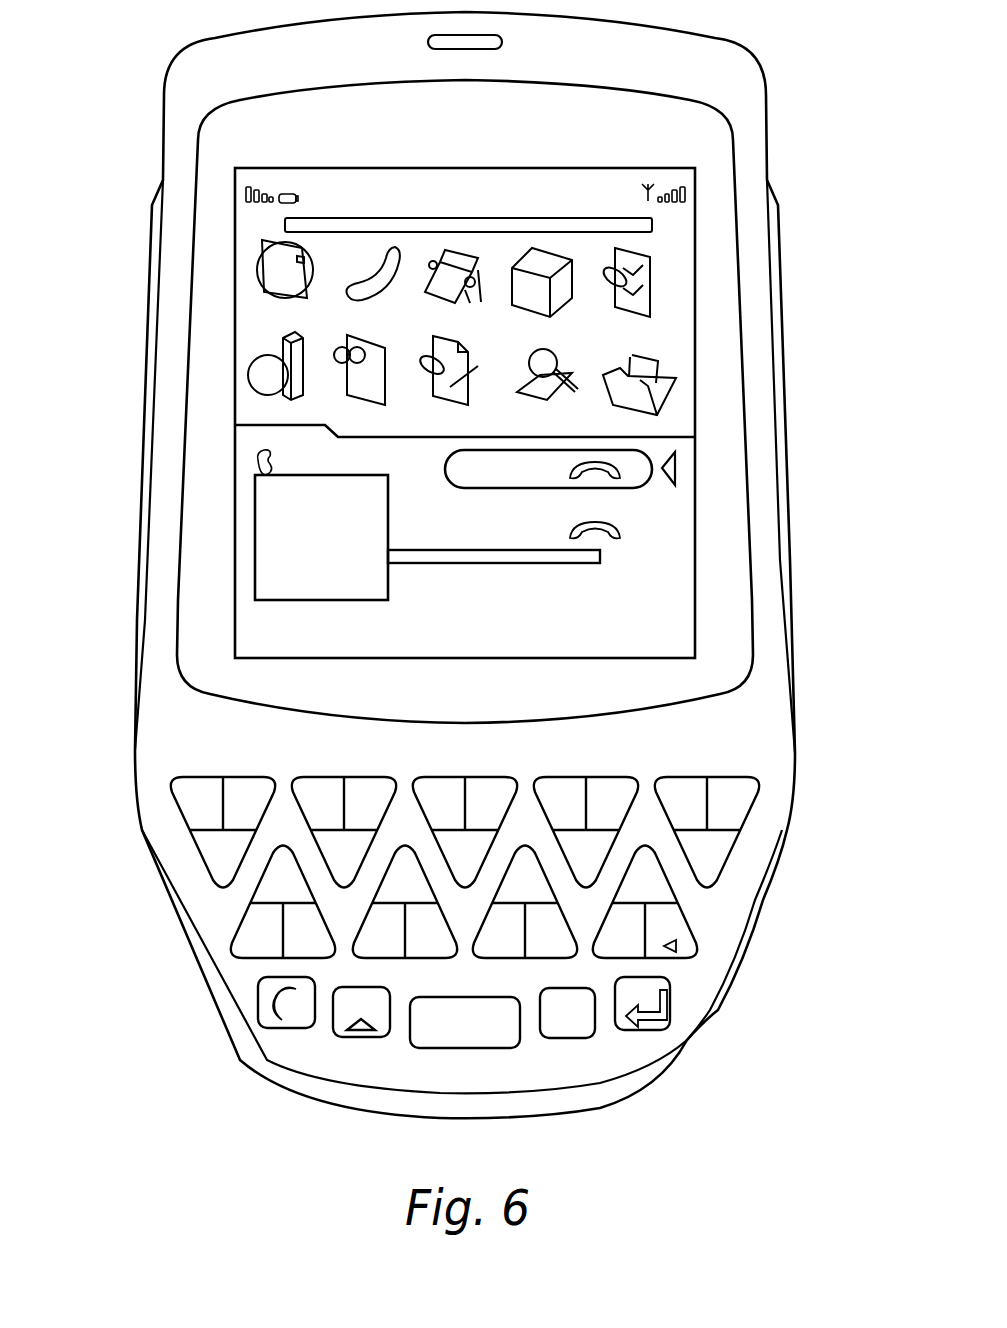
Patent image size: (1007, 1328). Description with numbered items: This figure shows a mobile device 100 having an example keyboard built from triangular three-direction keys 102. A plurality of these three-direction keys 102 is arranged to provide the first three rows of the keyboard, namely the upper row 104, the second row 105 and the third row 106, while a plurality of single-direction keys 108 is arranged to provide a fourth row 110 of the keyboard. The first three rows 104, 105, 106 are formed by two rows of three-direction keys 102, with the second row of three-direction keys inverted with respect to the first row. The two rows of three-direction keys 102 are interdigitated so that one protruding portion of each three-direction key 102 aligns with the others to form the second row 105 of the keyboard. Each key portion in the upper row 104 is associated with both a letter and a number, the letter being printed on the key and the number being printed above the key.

The mobile device 100 is at (122, 136).
The three-direction keys 102 is at (730, 850).
The upper row of the keyboard 104 is at (160, 803).
The second row of the keyboard 105 is at (185, 862).
The third row of the keyboard 106 is at (208, 930).
The single-direction keys 108 is at (670, 1000).
The fourth row of the keyboard 110 is at (240, 1000).